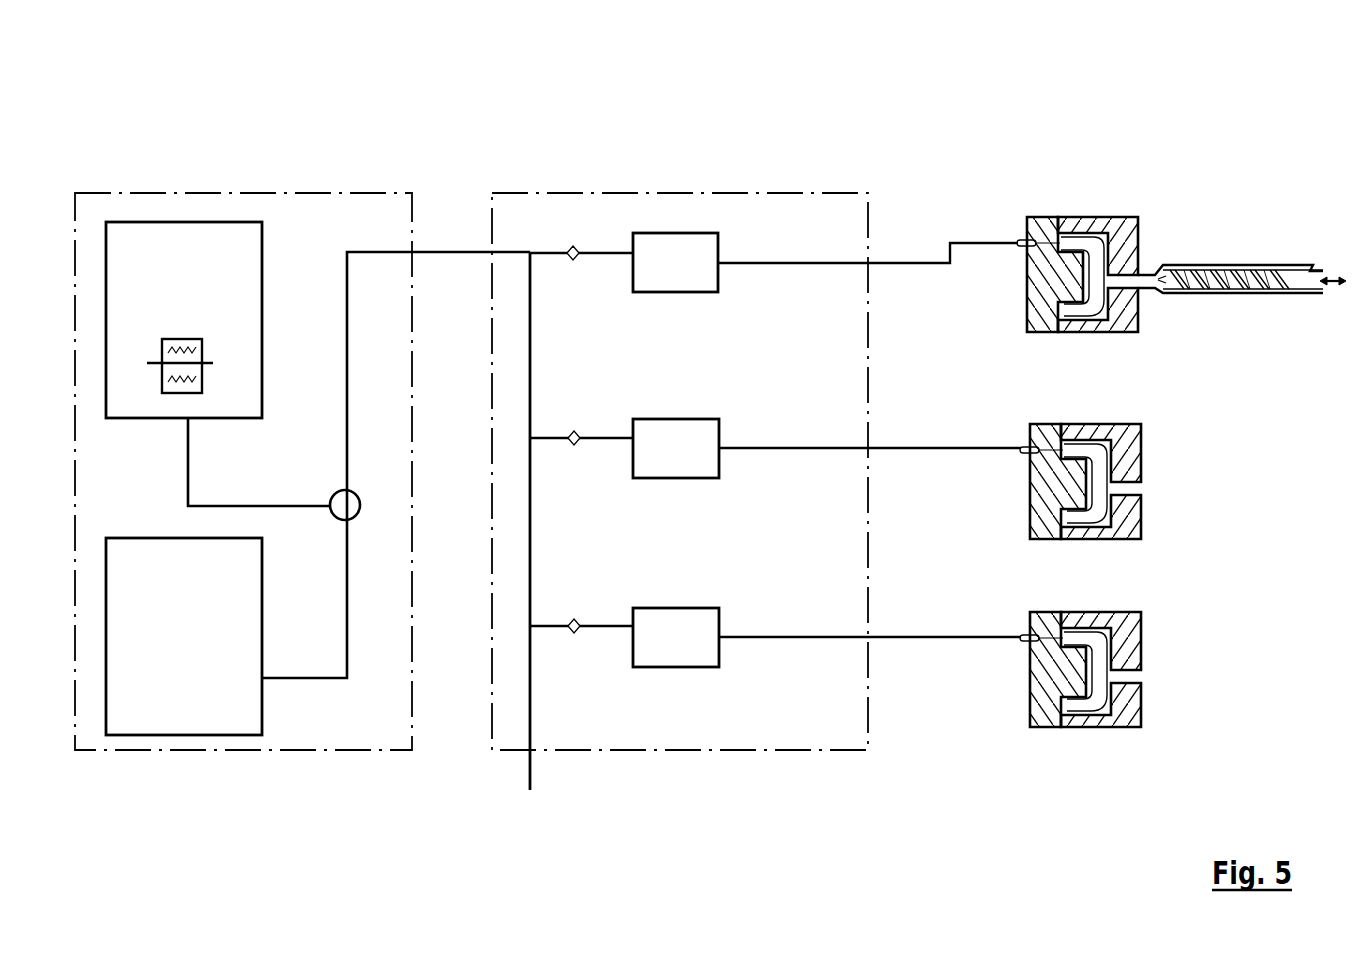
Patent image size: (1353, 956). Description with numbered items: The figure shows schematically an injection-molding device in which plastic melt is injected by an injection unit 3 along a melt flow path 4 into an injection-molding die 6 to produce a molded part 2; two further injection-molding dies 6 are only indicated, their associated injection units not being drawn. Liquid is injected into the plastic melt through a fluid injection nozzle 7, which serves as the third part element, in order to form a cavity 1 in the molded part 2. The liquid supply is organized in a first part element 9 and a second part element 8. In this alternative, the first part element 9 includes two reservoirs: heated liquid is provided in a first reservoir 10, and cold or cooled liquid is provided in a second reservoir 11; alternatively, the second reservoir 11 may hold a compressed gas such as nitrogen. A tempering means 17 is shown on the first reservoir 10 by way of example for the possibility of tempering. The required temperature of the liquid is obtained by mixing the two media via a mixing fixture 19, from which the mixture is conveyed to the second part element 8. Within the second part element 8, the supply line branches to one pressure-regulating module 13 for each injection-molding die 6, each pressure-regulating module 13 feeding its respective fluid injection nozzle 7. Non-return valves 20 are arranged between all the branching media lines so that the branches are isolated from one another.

The cavity 1 is at (1138, 235).
The molded part 2 is at (1128, 200).
The injection unit 3 is at (1186, 398).
The melt flow path 4 is at (1140, 258).
The injection-molding die 6 is at (1128, 398).
The fluid injection nozzle 7 is at (1047, 243).
The second part element 8 is at (527, 193).
The first part element 9 is at (88, 195).
The first reservoir 10 is at (158, 292).
The second reservoir 11 is at (185, 618).
The pressure-regulating module 13 is at (693, 625).
The tempering means 17 is at (189, 338).
The mixing fixture 19 is at (348, 505).
The non-return valve 20 is at (574, 620).